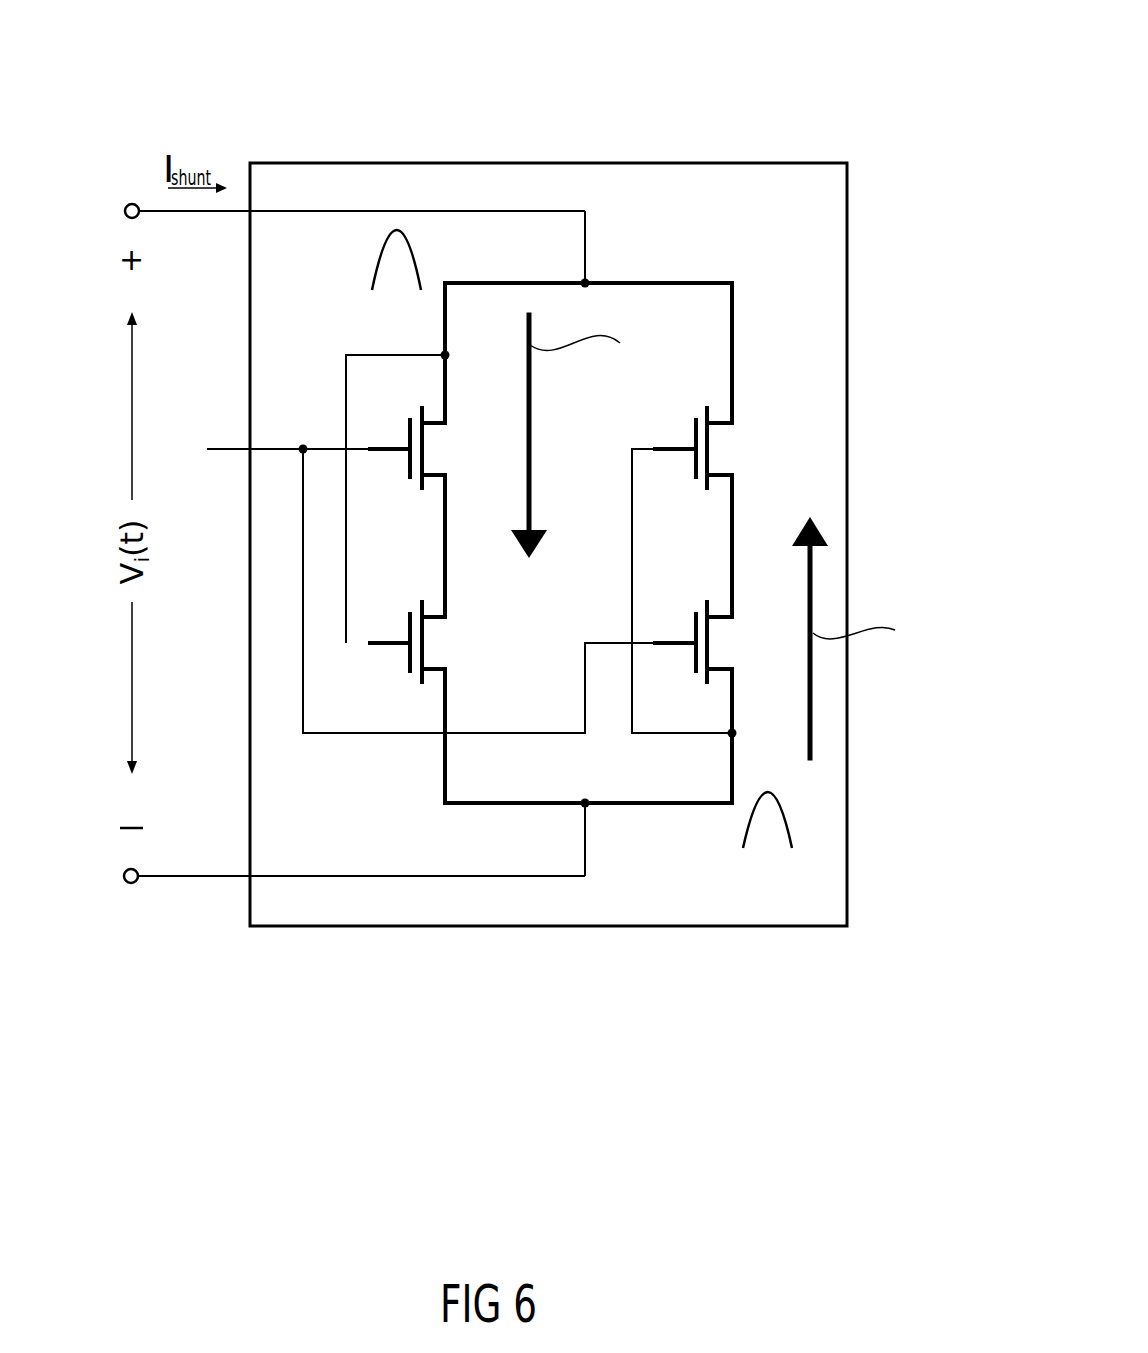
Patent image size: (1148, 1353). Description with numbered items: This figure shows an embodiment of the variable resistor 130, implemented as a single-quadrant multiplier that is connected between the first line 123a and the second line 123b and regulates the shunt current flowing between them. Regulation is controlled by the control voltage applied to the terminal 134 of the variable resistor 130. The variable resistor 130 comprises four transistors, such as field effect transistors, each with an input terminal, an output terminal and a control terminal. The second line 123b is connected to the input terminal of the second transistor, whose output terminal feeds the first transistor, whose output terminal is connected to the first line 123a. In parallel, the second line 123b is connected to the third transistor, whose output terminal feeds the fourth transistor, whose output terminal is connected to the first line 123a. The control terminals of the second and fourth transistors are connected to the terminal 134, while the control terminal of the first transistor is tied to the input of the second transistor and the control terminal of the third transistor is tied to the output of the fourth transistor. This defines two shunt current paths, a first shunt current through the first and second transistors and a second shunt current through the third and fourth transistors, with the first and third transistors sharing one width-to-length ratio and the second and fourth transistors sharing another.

The variable resistor 130 is at (666, 84).
The second line 123b is at (243, 210).
The first line 123a is at (243, 878).
The terminal 134 is at (227, 452).